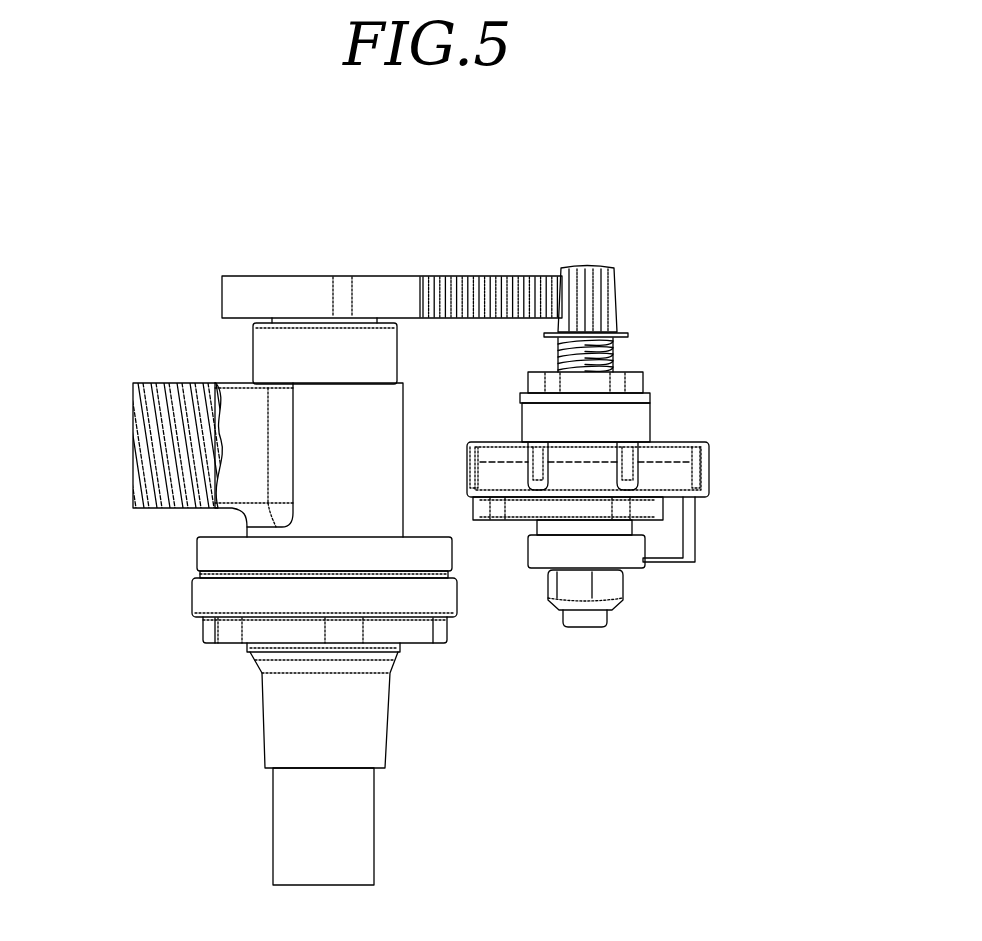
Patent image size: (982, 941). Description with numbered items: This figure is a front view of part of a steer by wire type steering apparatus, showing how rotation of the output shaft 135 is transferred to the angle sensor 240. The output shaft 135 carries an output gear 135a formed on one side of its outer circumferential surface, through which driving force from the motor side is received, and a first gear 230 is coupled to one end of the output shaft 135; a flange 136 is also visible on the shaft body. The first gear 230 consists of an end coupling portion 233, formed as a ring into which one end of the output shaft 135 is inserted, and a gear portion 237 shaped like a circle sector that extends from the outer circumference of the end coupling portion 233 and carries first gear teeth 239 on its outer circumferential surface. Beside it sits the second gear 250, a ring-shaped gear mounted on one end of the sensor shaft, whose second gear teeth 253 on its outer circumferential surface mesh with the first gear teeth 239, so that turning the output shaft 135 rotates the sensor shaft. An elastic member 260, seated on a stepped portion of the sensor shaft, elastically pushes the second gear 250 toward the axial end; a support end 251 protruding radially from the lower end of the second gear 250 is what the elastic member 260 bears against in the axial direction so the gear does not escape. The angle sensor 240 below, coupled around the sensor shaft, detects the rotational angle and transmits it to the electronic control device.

The output shaft 135 is at (257, 601).
The output gear 135a is at (150, 441).
The flange 136 is at (200, 552).
The first gear 230 is at (336, 271).
The end coupling portion 233 is at (283, 288).
The gear portion 237 is at (387, 287).
The first gear teeth 239 is at (484, 287).
The angle sensor 240 is at (727, 465).
The second gear 250 is at (633, 292).
The support end 251 is at (628, 322).
The second gear teeth 253 is at (608, 288).
The elastic member 260 is at (613, 352).